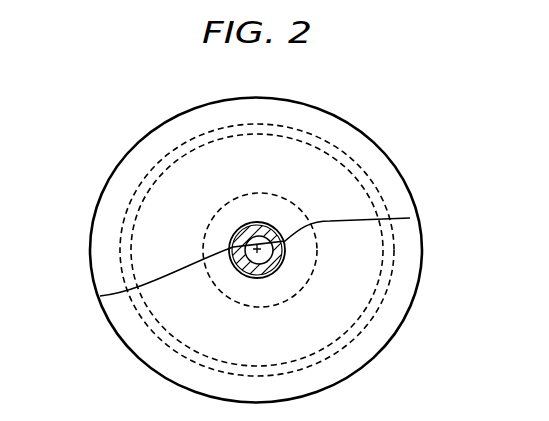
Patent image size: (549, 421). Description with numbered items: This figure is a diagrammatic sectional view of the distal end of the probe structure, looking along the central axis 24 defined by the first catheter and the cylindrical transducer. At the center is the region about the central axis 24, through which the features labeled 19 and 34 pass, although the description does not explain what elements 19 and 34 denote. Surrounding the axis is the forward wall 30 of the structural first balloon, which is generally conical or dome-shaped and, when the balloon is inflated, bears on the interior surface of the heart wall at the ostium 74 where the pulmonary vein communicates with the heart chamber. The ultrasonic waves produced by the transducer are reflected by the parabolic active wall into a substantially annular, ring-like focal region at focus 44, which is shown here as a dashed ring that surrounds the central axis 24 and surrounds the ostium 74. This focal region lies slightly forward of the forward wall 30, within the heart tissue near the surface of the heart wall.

The first cable/line 19 is at (410, 218).
The central axis 24 is at (100, 296).
The forward wall 30 is at (360, 260).
The central hub 34 is at (280, 276).
The focus 44 is at (350, 148).
The ostium 74 is at (205, 218).